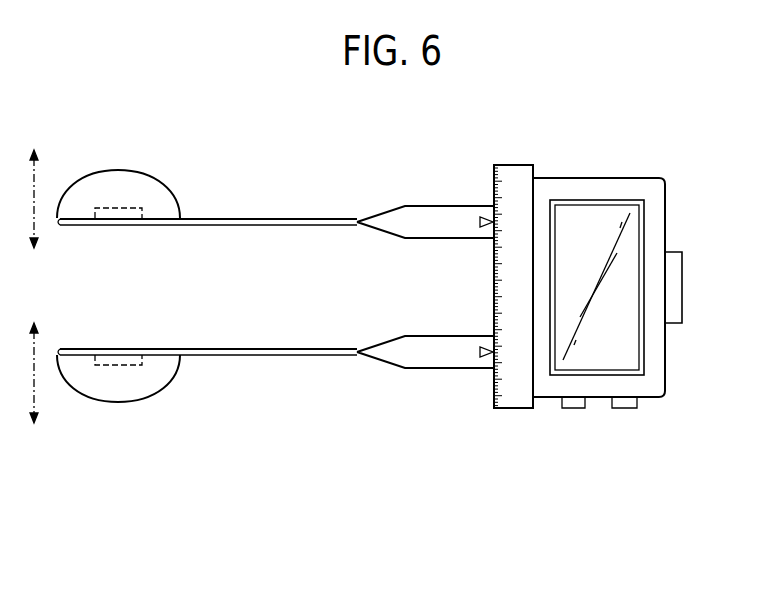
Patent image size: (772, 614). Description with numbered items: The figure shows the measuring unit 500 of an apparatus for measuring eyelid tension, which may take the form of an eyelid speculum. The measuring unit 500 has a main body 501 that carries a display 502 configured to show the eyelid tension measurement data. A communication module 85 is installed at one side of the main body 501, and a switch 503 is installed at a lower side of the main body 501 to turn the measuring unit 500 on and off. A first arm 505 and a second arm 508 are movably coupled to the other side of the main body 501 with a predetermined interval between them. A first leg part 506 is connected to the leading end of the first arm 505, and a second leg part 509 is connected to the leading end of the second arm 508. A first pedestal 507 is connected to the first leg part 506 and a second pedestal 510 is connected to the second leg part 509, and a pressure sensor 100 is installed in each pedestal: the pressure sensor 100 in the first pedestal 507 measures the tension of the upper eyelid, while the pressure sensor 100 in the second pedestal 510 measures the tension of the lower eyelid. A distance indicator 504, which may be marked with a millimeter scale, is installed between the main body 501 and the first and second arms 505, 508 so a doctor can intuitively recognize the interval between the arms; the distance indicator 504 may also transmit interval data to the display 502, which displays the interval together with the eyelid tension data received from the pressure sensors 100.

The measuring unit 500 is at (236, 508).
The main body 501 is at (663, 166).
The display 502 is at (617, 343).
The switch 503 is at (622, 410).
The distance indicator 504 is at (513, 172).
The first arm 505 is at (428, 222).
The first leg part 506 is at (266, 218).
The first pedestal 507 is at (140, 183).
The second arm 508 is at (428, 352).
The second leg part 509 is at (266, 356).
The second pedestal 510 is at (140, 390).
The pressure sensor 100 is at (113, 207).
The communication module 85 is at (676, 285).